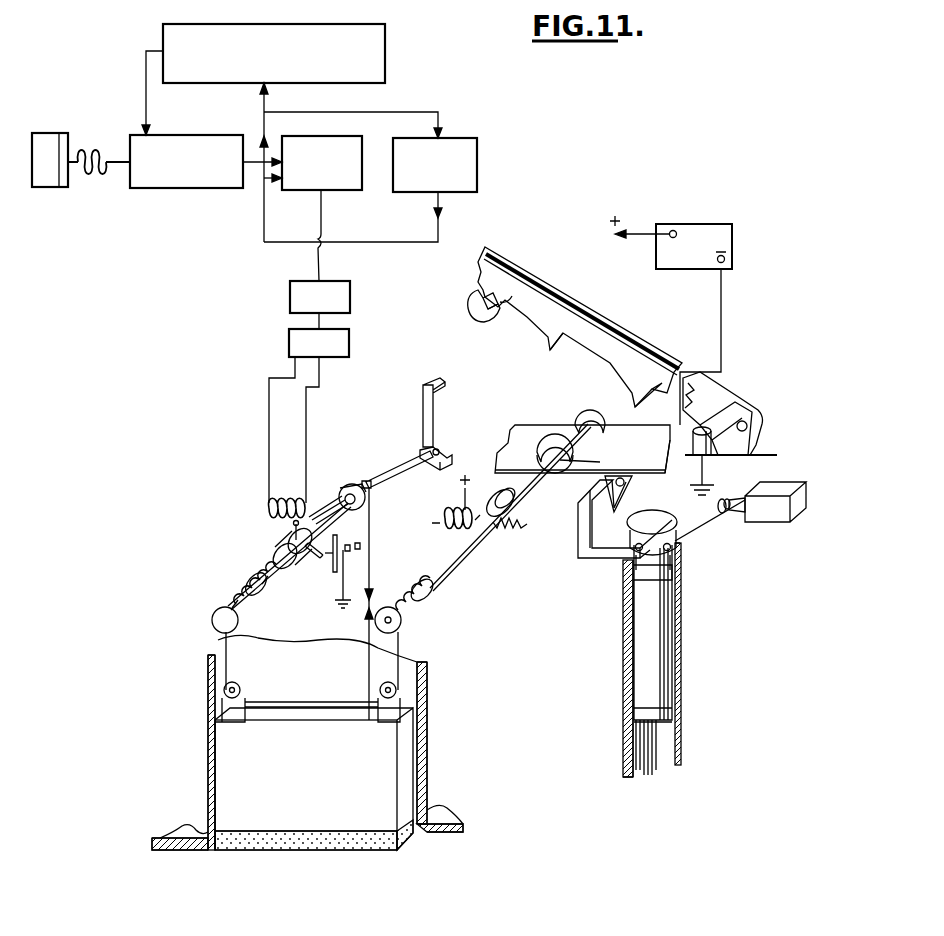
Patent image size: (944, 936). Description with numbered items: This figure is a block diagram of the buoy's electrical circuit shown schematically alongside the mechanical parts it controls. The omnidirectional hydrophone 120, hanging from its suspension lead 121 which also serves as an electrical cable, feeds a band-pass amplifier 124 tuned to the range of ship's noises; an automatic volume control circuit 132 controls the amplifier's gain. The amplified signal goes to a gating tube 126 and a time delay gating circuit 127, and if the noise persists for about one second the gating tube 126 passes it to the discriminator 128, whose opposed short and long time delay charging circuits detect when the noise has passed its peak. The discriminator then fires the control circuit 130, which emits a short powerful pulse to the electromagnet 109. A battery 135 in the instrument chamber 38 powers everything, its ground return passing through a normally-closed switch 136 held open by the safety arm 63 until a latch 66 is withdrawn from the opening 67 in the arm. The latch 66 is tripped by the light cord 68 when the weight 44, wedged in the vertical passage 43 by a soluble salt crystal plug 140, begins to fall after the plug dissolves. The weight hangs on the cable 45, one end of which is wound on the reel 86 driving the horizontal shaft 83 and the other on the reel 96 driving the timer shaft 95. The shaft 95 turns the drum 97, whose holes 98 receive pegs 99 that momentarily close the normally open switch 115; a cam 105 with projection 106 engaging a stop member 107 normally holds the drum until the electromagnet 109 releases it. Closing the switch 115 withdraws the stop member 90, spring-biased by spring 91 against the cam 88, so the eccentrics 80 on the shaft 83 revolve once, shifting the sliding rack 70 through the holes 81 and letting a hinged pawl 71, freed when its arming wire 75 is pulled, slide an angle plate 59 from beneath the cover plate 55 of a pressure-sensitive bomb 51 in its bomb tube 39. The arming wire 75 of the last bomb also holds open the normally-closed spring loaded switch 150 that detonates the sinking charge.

The omnidirectional hydrophone 120 is at (47, 133).
The suspension lead 121 is at (96, 148).
The band-pass amplifier 124 is at (162, 188).
The gating tube 126 is at (362, 152).
The time delay gating circuit 127 is at (477, 162).
The discriminator 128 is at (350, 300).
The control circuit 130 is at (349, 340).
The automatic volume control circuit 132 is at (385, 60).
The battery 135 is at (724, 242).
The normally-closed switch 136 is at (712, 455).
The safety arm 63 is at (566, 312).
The opening 67 is at (474, 302).
The latch 66 is at (423, 416).
The cam 105 is at (364, 480).
The projection 106 is at (336, 488).
The stop member 107 is at (316, 507).
The electromagnet 109 is at (269, 509).
The peg 99 is at (290, 537).
The shaft 95 is at (270, 570).
The reel 96 is at (231, 600).
The drum 97 is at (290, 572).
The holes 98 is at (306, 557).
The normally open switch 115 is at (350, 552).
The light cord 68 is at (369, 521).
The horizontal shaft 83 is at (455, 562).
The reel 86 is at (418, 615).
The cam 88 is at (516, 506).
The stop member 90 is at (475, 511).
The spring 91 is at (509, 535).
The sliding rack 70 is at (530, 425).
The eccentrics 80 is at (582, 422).
The holes 81 is at (600, 462).
The hinged pawls 71 is at (640, 488).
The angle plates 59 is at (578, 530).
The bomb tubes 39 is at (681, 628).
The pressure-sensitive bomb 51 is at (660, 680).
The cover plate 55 is at (667, 524).
The arming wire 75 is at (714, 534).
The normally-closed spring loaded switch 150 is at (768, 522).
The vertical passage 43 is at (208, 682).
The weight 44 is at (413, 764).
The cable 45 is at (238, 676).
The instrument chamber 38 is at (186, 830).
The soluble salt crystal plug 140 is at (334, 852).